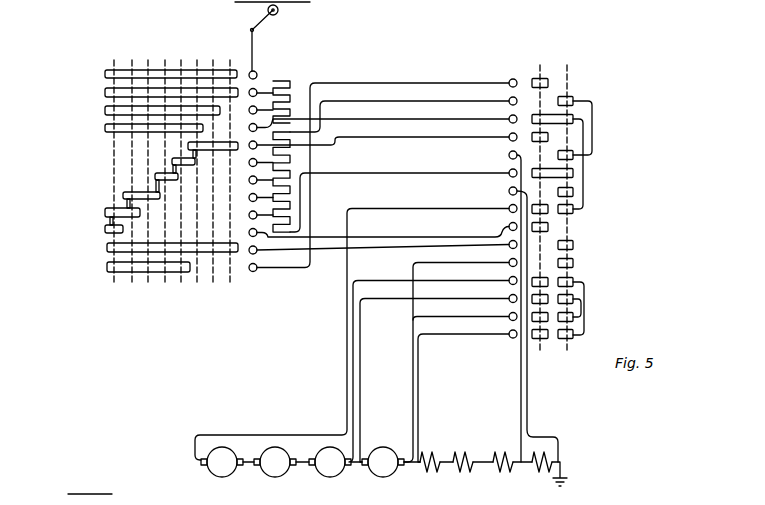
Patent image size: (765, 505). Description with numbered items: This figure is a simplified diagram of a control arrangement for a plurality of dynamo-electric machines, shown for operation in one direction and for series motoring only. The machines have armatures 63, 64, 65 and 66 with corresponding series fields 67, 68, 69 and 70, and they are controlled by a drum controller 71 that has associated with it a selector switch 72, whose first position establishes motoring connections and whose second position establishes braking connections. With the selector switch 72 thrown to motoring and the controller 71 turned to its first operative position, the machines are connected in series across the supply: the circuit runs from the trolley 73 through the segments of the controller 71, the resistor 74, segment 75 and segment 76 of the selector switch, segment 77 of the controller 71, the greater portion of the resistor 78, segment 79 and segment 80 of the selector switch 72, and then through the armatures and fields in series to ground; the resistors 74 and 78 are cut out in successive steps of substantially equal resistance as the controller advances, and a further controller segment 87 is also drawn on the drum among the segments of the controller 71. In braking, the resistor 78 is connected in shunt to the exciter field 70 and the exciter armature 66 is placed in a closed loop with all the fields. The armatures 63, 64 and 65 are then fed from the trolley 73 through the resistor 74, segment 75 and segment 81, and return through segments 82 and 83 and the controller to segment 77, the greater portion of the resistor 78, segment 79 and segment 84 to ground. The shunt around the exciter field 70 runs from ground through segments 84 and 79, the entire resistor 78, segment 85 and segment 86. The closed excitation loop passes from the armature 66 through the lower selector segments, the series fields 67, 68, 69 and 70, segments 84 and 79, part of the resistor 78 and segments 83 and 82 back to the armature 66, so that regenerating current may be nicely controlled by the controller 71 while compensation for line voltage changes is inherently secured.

The armature 63 is at (222, 472).
The armature 64 is at (275, 472).
The armature 65 is at (330, 472).
The exciter armature 66 is at (383, 472).
The series field 67 is at (428, 475).
The series field 68 is at (462, 475).
The series field 69 is at (502, 475).
The exciter field 70 is at (539, 475).
The drum controller 71 is at (171, 158).
The selector switch 72 is at (547, 346).
The trolley 73 is at (277, 15).
The resistor 74 is at (290, 79).
The segment 75 is at (576, 116).
The segment 76 is at (550, 137).
The segment 77 is at (112, 144).
The resistor 78 is at (308, 182).
The segment 79 is at (575, 173).
The segment 80 is at (550, 211).
The segment 81 is at (575, 209).
The segment 82 is at (575, 263).
The segment 83 is at (575, 245).
The segment 84 is at (575, 192).
The segment 85 is at (572, 99).
The segment 86 is at (575, 153).
The contact strip 87 is at (107, 247).